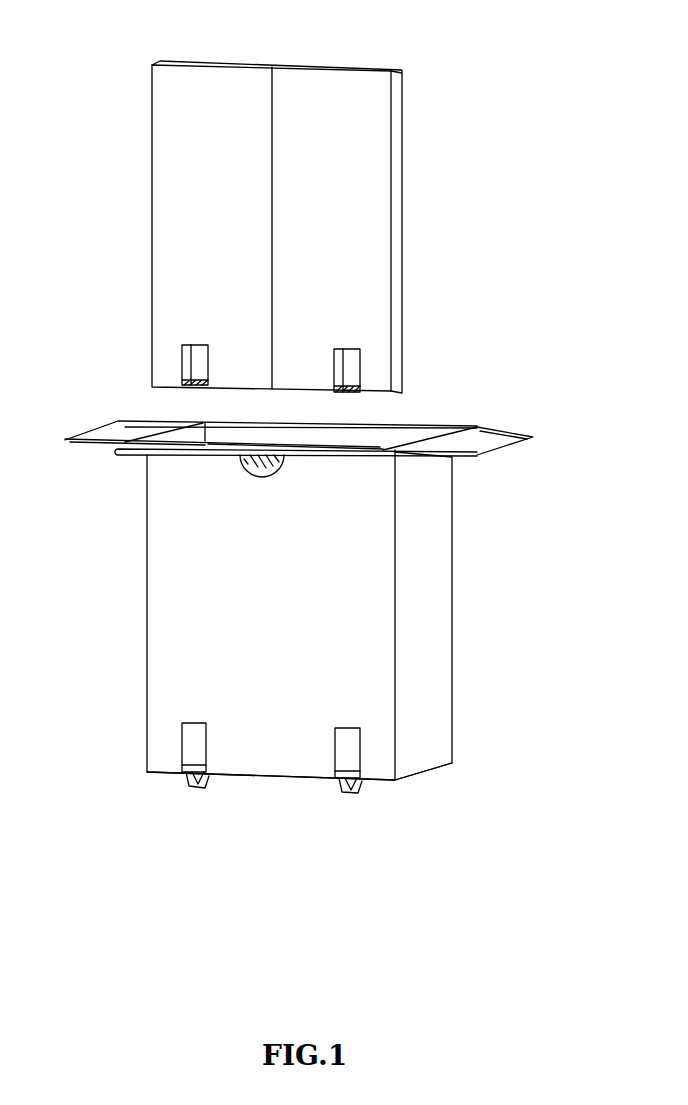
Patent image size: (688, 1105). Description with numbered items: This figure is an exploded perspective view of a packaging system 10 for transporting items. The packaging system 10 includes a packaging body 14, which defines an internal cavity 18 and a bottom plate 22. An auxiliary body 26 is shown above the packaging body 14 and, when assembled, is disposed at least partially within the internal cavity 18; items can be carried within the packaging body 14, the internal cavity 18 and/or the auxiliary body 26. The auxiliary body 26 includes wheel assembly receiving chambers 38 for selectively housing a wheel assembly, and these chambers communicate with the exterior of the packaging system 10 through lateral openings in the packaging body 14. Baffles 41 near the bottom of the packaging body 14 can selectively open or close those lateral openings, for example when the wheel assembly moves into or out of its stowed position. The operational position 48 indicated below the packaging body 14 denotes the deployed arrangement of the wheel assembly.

The packaging system 10 is at (92, 97).
The auxiliary body 26 is at (393, 135).
The wheel assembly receiving chambers 38 is at (192, 363).
The internal cavity 18 is at (383, 440).
The packaging body 14 is at (430, 567).
The bottom plate 22 is at (423, 777).
The baffles 41 is at (190, 740).
The operational position 48 is at (380, 864).